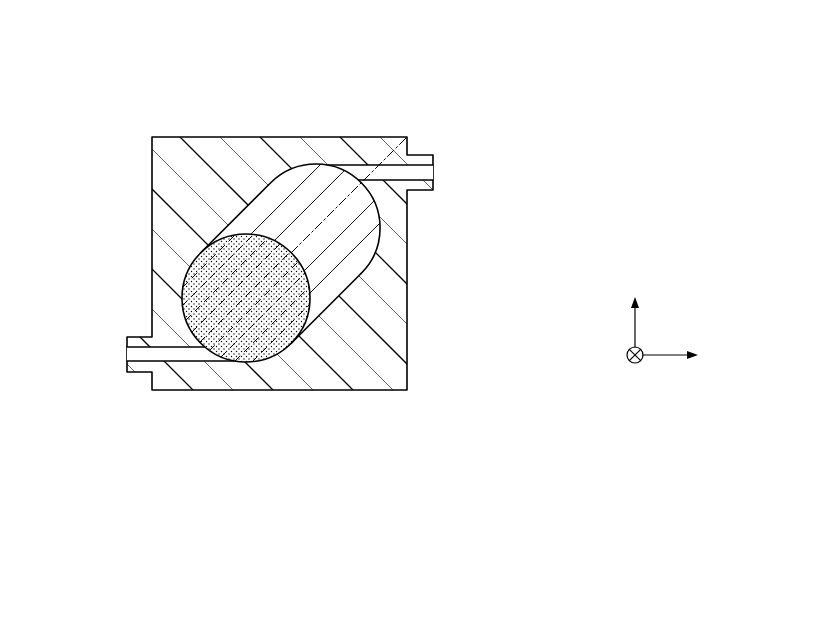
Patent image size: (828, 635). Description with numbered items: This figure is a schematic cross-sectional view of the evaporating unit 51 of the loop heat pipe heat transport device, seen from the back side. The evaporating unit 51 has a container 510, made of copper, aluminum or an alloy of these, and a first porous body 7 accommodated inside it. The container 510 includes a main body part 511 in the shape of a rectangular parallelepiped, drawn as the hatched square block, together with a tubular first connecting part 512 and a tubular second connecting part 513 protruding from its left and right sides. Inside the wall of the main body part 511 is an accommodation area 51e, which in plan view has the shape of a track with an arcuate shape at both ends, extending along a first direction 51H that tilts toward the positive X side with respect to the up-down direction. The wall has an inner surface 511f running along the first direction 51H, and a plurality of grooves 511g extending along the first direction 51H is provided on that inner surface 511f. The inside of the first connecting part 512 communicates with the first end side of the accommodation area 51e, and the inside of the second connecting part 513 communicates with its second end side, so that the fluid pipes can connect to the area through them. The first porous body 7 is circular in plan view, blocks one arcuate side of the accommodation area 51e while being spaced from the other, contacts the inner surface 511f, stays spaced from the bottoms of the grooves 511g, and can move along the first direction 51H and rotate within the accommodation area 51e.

The evaporating unit 51 is at (168, 95).
The container 510 is at (134, 250).
The main body part 511 is at (243, 140).
The inner surface 511f is at (340, 253).
The grooves 511g is at (343, 225).
The accommodation area 51e is at (313, 176).
The first direction 51H is at (407, 137).
The first connecting part 512 is at (427, 153).
The second connecting part 513 is at (130, 372).
The first porous body 7 is at (262, 343).